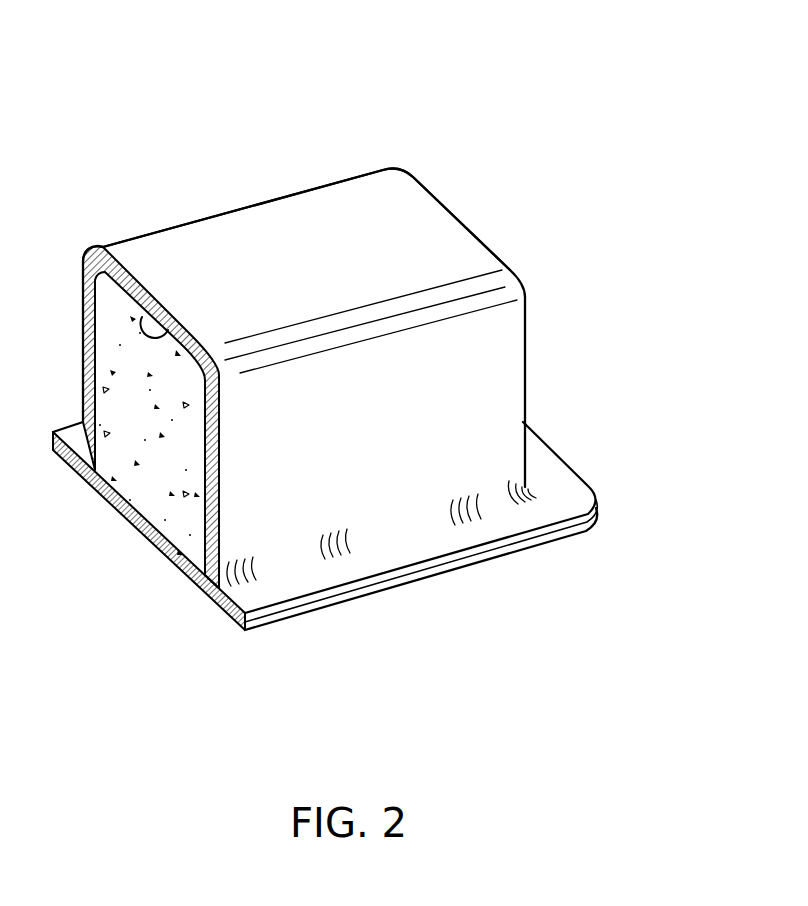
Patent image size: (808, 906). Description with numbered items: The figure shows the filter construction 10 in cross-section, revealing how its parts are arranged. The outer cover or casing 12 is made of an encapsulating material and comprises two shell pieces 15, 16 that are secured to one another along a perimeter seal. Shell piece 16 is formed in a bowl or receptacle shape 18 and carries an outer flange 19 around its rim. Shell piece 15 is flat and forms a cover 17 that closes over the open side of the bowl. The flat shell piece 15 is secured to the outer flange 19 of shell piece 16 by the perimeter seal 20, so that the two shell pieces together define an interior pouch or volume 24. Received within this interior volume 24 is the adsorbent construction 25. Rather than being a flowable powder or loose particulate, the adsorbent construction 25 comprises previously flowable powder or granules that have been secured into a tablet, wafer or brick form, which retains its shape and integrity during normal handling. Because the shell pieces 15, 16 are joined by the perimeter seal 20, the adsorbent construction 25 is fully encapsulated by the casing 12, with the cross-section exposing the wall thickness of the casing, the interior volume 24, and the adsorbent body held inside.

The filter construction 10 is at (407, 377).
The cover or casing 12 is at (407, 330).
The bowl or receptacle shape 18 is at (423, 200).
The shell piece 16 is at (507, 367).
The interior pouch or volume 24 is at (150, 313).
The adsorbent construction 25 is at (150, 473).
The shell piece 15 is at (400, 582).
The outer flange 19 is at (568, 490).
The perimeter seal 20 is at (390, 582).
The cover 17 is at (317, 612).